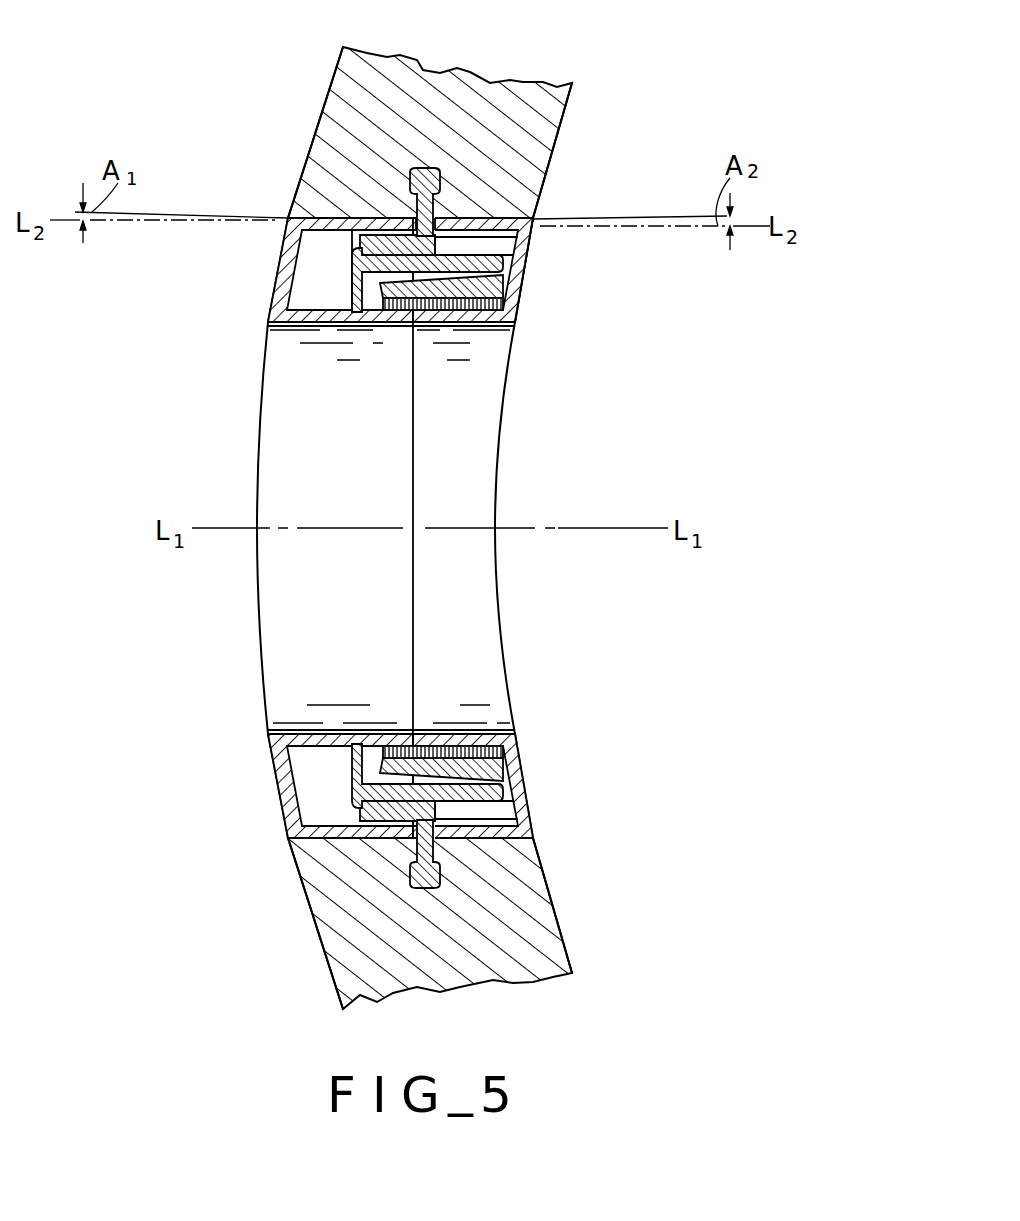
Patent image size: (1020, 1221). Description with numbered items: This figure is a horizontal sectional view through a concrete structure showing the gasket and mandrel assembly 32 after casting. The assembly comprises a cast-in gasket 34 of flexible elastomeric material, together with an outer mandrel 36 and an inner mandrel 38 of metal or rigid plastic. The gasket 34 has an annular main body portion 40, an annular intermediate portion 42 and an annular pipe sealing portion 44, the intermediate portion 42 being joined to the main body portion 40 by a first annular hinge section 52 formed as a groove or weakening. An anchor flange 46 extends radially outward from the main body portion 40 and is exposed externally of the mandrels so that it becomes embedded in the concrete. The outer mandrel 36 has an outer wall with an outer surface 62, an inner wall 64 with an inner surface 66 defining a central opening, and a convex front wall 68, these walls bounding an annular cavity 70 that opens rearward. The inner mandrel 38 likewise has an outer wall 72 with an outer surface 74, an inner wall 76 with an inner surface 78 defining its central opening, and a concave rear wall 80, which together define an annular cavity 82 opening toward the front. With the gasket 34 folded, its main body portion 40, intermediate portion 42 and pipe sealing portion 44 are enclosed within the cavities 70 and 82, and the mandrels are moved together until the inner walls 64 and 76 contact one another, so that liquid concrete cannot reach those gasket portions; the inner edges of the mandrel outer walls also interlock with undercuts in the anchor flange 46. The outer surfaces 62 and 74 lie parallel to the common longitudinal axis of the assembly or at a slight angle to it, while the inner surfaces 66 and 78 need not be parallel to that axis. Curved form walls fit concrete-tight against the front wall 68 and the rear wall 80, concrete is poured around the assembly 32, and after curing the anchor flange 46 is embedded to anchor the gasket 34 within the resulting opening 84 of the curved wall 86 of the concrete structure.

The gasket and mandrel assembly 32 is at (216, 358).
The gasket 34 is at (316, 271).
The outer mandrel 36 is at (351, 528).
The inner mandrel 38 is at (460, 402).
The main body portion 40 is at (365, 238).
The intermediate portion 42 is at (450, 262).
The pipe sealing portion 44 is at (503, 307).
The anchor flange 46 is at (419, 168).
The first annular hinge section 52 is at (416, 226).
The outer surface of outer wall of outer mandrel 62 is at (405, 232).
The inner wall of outer mandrel 64 is at (318, 327).
The inner surface of inner wall of outer mandrel 66 is at (292, 474).
The front wall of outer mandrel 68 is at (278, 267).
The annular cavity of outer mandrel 70 is at (307, 243).
The outer wall of inner mandrel 72 is at (458, 238).
The outer surface of outer wall of inner mandrel 74 is at (470, 255).
The inner wall of inner mandrel 76 is at (445, 327).
The inner surface of inner wall of inner mandrel 78 is at (417, 474).
The rear wall of inner mandrel 80 is at (435, 277).
The annular cavity of inner mandrel 82 is at (505, 245).
The opening 84 is at (533, 228).
The curved wall 86 is at (487, 86).